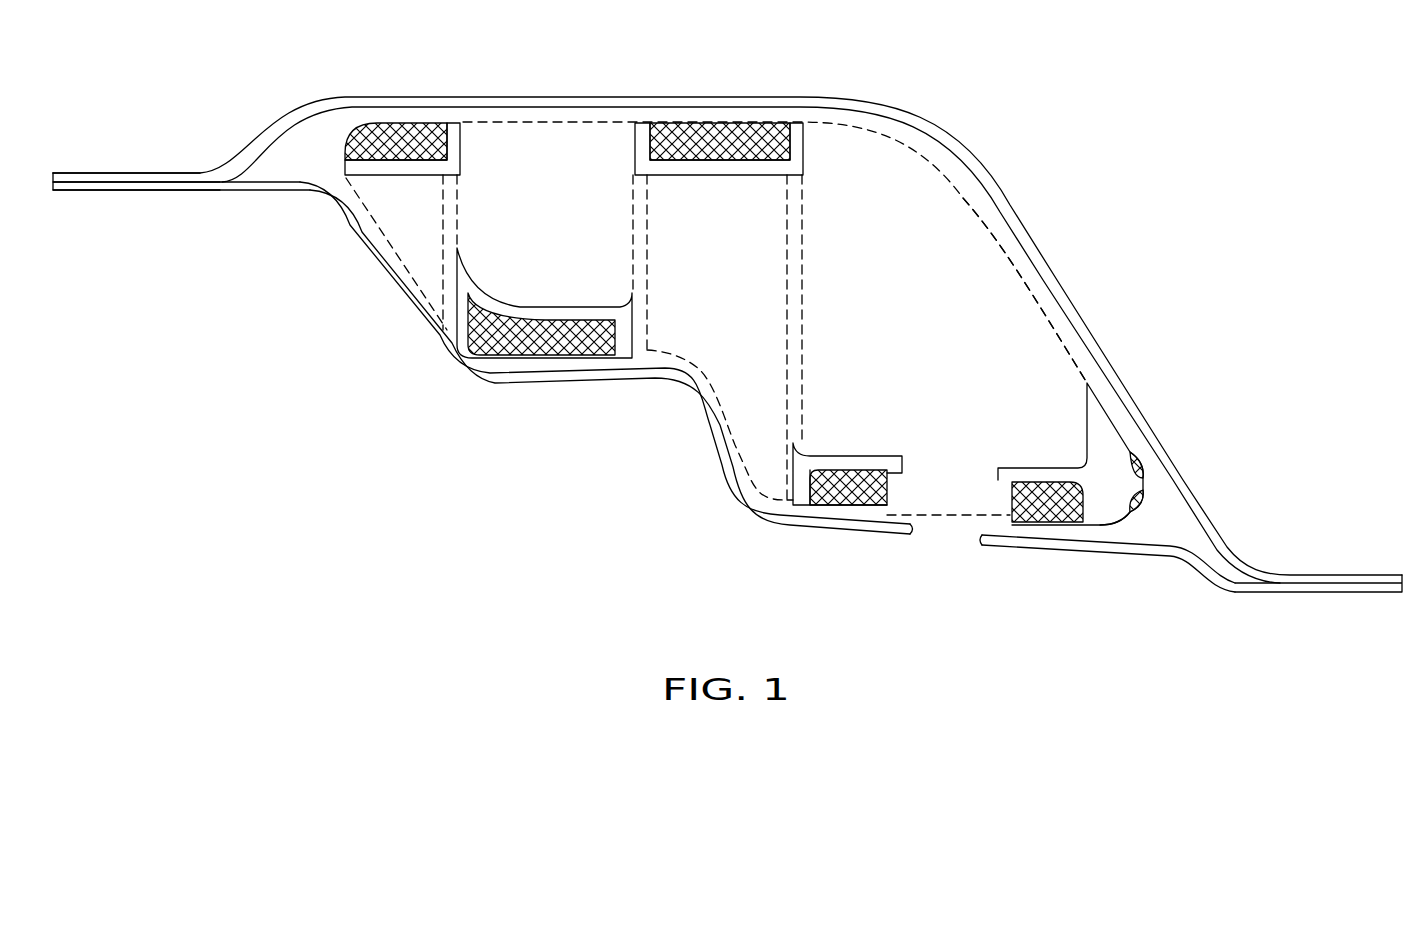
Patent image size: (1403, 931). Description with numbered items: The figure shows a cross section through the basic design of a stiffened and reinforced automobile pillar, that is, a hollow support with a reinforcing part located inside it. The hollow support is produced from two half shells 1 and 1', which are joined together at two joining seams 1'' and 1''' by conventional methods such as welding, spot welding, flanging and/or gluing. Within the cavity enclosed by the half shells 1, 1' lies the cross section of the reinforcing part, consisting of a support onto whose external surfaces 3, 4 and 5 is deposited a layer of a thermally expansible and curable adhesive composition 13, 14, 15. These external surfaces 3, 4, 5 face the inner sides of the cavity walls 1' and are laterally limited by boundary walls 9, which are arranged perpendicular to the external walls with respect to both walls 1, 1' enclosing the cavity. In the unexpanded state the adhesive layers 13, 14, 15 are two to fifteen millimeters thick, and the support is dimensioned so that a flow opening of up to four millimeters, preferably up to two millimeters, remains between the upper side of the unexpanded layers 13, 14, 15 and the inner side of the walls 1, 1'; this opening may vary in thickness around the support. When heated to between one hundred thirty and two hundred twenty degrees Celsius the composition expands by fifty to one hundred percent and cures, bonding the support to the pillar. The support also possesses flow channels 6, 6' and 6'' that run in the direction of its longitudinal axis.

The half shell 1 is at (727, 344).
The half shell 1' is at (606, 358).
The joining seam 1'' is at (1164, 546).
The joining seam 1''' is at (136, 221).
The external surface of the support 3 is at (400, 167).
The external surface of the support 4 is at (1145, 472).
The external surface of the support 5 is at (563, 307).
The flow channel 6 is at (716, 210).
The flow channel 6' is at (754, 365).
The flow channel 6'' is at (1043, 290).
The boundary wall 9 is at (461, 154).
The layer of thermally expansible and curable adhesive composition 13 is at (385, 130).
The layer of thermally expansible and curable adhesive composition 14 is at (1137, 520).
The layer of thermally expansible and curable adhesive composition 15 is at (1008, 506).